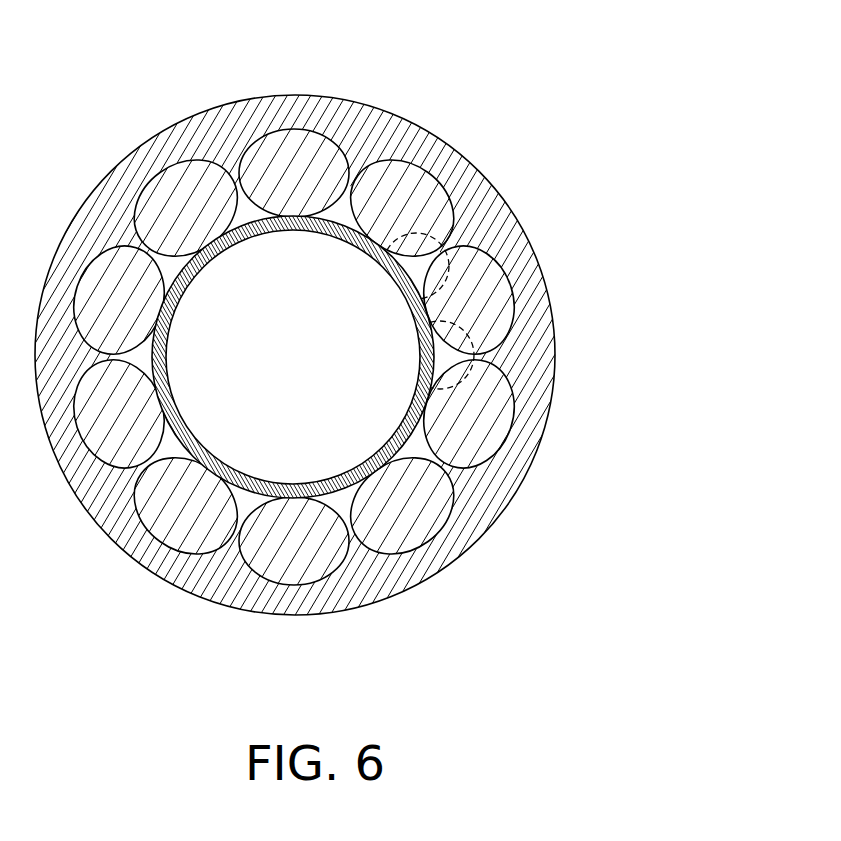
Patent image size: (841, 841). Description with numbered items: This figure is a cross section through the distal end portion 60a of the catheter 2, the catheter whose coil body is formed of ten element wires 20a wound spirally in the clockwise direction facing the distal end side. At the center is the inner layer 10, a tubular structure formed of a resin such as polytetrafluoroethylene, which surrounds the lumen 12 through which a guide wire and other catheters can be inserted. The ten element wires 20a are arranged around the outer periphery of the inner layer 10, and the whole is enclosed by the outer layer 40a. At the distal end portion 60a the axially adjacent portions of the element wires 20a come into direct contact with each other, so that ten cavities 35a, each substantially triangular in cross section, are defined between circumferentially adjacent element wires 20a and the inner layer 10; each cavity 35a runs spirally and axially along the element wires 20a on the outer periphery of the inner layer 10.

The catheter 2 is at (437, 66).
The inner layer 10 is at (197, 445).
The lumen 12 is at (345, 417).
The element wires 20a is at (490, 423).
The cavities 35a is at (443, 263).
The outer layer 40a is at (475, 225).
The distal end portion 60a is at (128, 152).